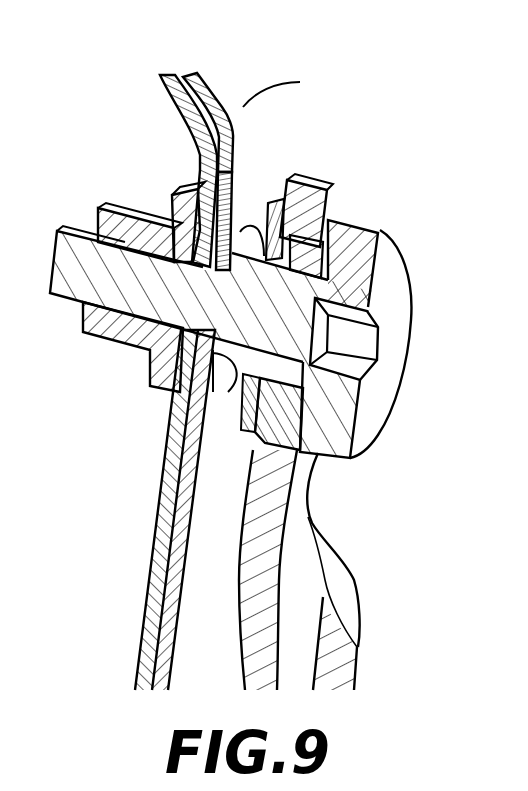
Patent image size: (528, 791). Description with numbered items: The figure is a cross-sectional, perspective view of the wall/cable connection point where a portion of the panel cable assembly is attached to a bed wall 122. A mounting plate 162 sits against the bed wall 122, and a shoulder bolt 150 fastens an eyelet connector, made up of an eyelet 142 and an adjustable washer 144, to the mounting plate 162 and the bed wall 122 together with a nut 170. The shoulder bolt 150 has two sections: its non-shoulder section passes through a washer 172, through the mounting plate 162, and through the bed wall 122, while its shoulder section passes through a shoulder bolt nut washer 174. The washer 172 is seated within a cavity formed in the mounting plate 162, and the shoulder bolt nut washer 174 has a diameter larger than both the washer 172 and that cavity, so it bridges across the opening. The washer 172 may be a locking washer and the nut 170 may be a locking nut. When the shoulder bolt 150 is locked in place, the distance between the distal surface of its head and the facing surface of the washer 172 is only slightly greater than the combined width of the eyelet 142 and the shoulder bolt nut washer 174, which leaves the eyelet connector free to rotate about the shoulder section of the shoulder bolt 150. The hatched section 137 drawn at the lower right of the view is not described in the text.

The bed wall 122 is at (222, 108).
The mounting plate 162 is at (262, 132).
The shoulder bolt nut washer 174 is at (283, 230).
The eyelet 142 is at (307, 213).
The nut 170 is at (110, 228).
The shoulder bolt 150 is at (392, 280).
The washer 172 is at (215, 373).
The adjustable washer 144 is at (280, 413).
The lower tube wall 137 is at (337, 660).